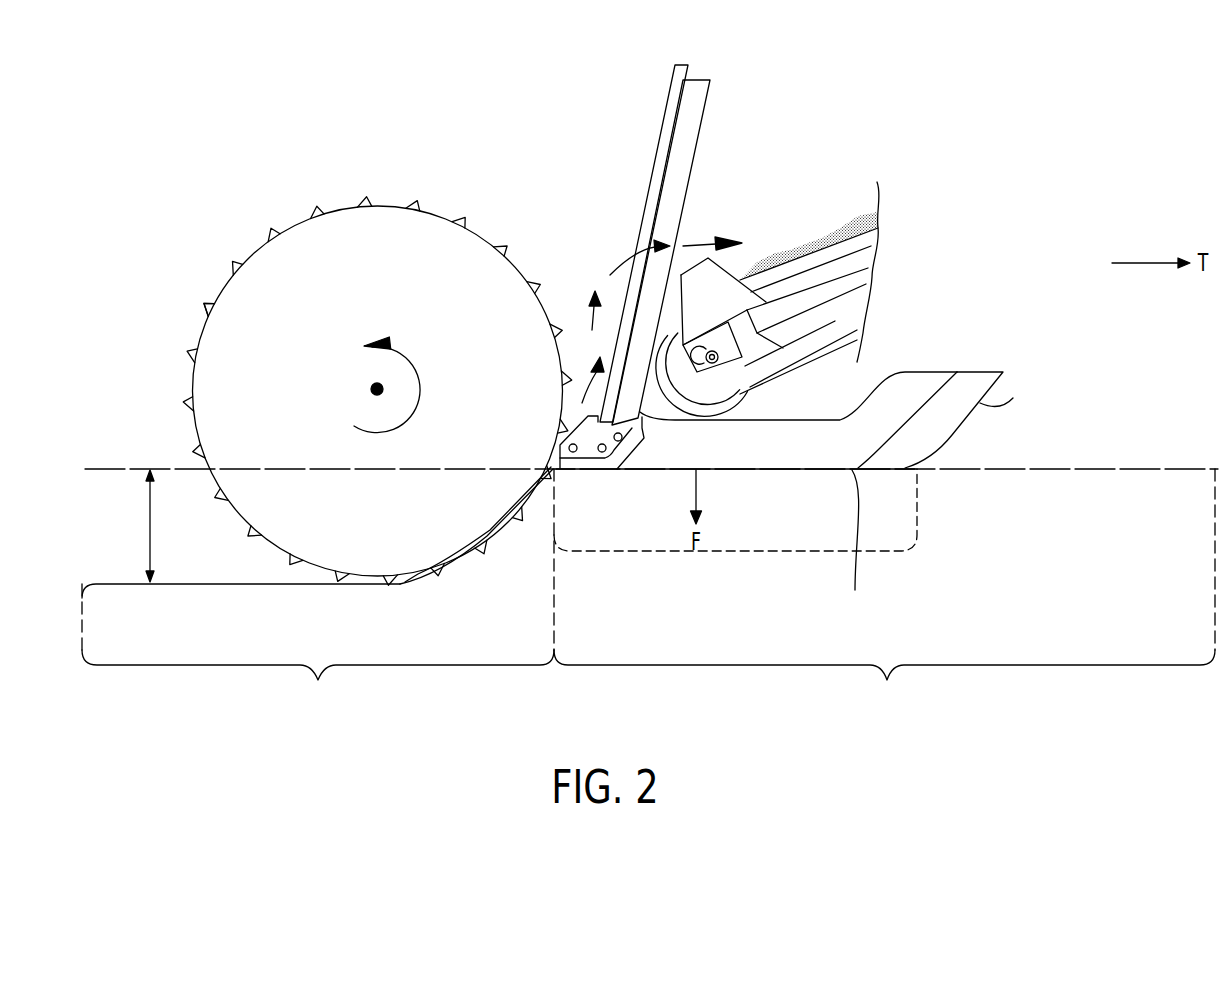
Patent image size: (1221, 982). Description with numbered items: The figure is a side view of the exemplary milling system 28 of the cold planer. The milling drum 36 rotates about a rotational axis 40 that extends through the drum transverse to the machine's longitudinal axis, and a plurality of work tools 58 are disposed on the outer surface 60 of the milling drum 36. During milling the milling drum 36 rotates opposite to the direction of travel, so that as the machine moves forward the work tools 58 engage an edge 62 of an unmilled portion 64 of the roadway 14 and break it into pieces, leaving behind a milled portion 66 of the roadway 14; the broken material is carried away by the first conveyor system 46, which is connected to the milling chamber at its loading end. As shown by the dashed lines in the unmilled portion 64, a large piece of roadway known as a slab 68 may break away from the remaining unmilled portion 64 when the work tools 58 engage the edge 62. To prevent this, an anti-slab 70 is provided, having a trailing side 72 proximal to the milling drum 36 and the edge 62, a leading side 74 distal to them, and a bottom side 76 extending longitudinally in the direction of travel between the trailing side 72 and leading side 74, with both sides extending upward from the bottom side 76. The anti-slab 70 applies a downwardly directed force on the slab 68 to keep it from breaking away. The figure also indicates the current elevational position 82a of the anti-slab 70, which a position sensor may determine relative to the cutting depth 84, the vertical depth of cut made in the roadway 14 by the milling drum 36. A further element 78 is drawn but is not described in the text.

The roadway 14 is at (1060, 469).
The milling system 28 is at (183, 142).
The milling drum 36 is at (322, 262).
The rotational axis 40 is at (377, 392).
The first conveyor system 46 is at (815, 268).
The work tools 58 is at (185, 398).
The outer surface 60 is at (203, 323).
The edge 62 is at (551, 475).
The unmilled portion 64 is at (884, 591).
The milled portion 66 is at (318, 648).
The slab 68 is at (727, 551).
The anti-slab 70 is at (763, 437).
The trailing side 72 is at (552, 469).
The leading side 74 is at (1013, 398).
The bottom side 76 is at (768, 470).
The deflector plate 78 is at (932, 372).
The current elevational position 82a is at (855, 590).
The cutting depth 84 is at (150, 526).